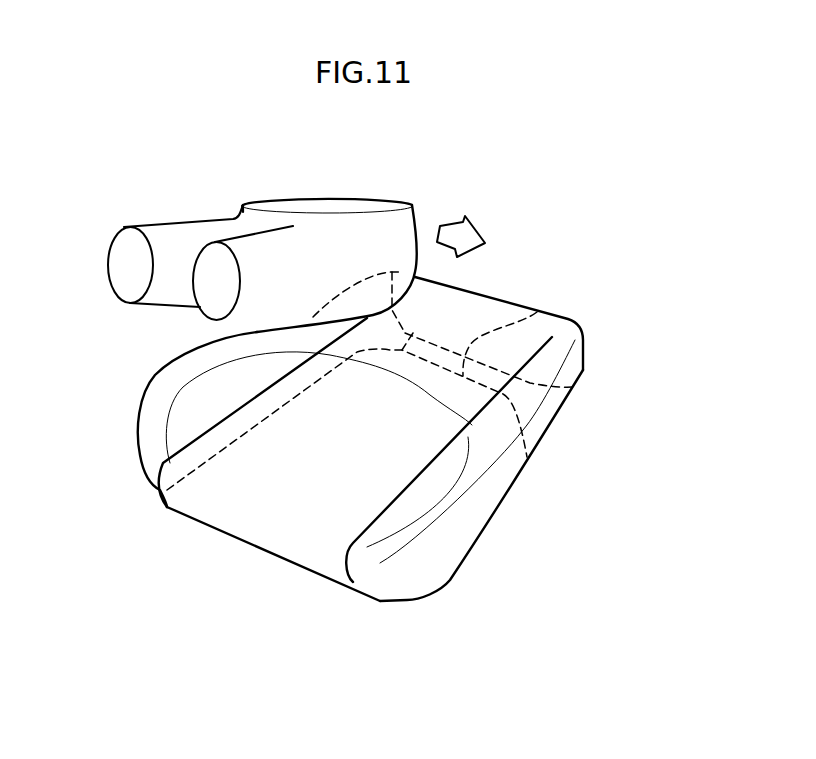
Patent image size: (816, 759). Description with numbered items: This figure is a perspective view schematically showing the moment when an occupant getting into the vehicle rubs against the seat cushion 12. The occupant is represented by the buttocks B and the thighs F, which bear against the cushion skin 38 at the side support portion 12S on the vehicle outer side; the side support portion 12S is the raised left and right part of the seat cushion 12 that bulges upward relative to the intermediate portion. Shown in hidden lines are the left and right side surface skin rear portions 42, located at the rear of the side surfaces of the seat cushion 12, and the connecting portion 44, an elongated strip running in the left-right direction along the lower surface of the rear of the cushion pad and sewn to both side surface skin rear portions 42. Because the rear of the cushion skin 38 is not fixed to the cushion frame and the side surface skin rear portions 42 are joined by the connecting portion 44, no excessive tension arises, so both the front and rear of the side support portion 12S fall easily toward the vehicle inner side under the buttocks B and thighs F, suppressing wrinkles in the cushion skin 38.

The thighs F is at (172, 218).
The buttocks B is at (360, 238).
The seat cushion 12 is at (290, 578).
The side support portion 12S is at (160, 388).
The cushion skin 38 is at (215, 512).
The side surface skin rear portion 42 is at (405, 333).
The connecting portion 44 is at (537, 312).